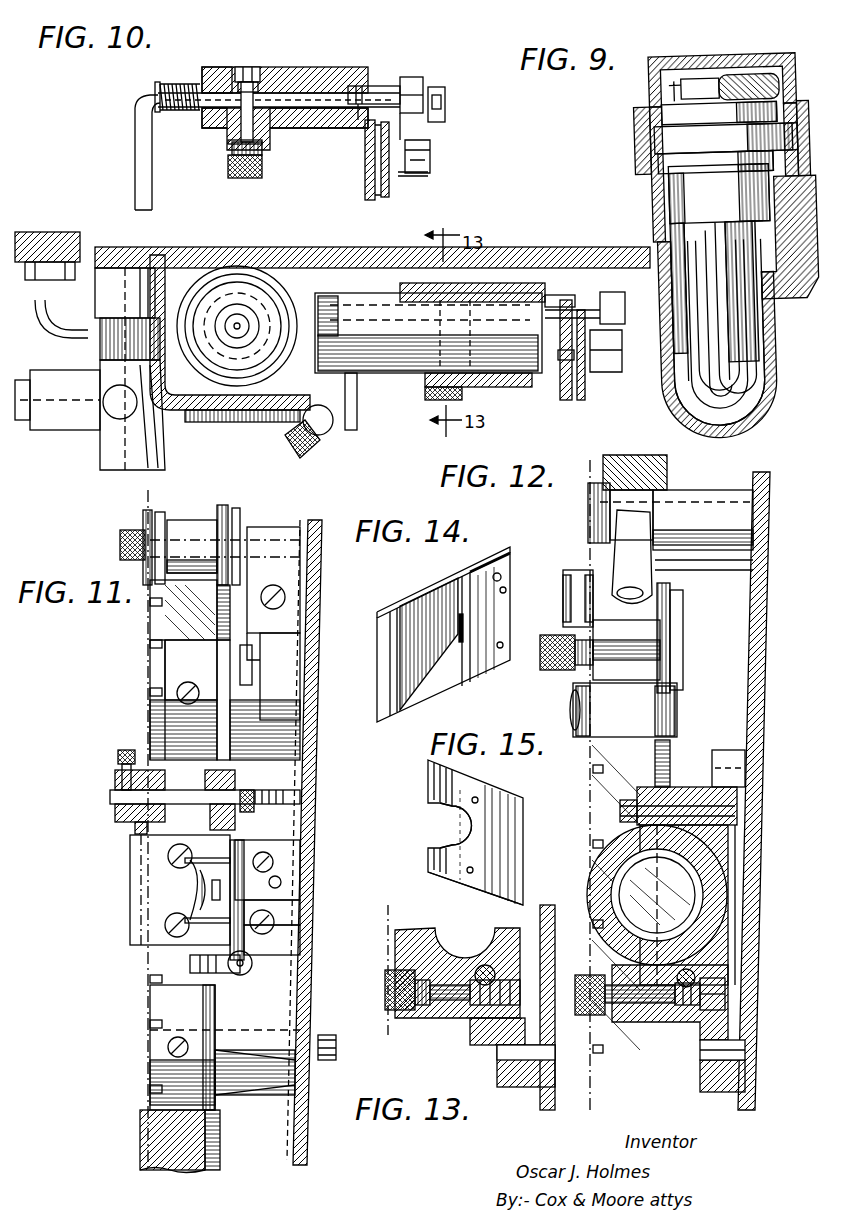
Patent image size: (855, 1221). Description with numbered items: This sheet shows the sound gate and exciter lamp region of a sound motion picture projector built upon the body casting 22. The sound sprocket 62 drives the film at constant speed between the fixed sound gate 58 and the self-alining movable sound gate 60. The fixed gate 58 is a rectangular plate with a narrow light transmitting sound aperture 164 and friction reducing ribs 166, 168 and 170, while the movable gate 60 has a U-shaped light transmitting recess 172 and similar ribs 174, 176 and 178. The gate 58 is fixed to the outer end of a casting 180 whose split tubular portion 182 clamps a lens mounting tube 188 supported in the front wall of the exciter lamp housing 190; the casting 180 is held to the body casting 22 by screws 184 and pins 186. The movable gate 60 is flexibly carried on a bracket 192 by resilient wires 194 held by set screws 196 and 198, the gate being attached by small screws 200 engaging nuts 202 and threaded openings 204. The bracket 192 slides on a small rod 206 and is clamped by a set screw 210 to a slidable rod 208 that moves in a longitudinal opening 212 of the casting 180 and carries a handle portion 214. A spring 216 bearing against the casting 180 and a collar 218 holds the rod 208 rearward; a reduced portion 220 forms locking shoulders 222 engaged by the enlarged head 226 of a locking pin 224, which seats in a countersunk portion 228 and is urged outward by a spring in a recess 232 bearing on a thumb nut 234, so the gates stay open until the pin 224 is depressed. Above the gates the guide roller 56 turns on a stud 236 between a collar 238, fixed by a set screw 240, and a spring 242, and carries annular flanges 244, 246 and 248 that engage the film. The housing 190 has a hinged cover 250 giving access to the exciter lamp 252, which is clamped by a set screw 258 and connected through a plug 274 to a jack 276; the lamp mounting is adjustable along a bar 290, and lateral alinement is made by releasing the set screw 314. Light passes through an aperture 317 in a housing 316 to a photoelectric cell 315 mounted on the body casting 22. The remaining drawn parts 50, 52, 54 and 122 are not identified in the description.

In FIG. 12, the body casting 22 is at (358, 247).
In FIG. 11, the body casting 22 is at (320, 626).
In FIG. 13, the body casting 22 is at (549, 908).
In FIG. 13, the knurled knob 50 is at (560, 668).
In FIG. 11, the bracket 52 is at (152, 655).
In FIG. 11, the adjusting knob 54 is at (143, 525).
In FIG. 11, the guide roller 56 is at (120, 810).
In FIG. 10, the fixed sound gate 58 is at (365, 183).
In FIG. 12, the fixed sound gate 58 is at (560, 396).
In FIG. 14, the fixed sound gate 58 is at (505, 570).
In FIG. 10, the movable sound gate 60 is at (389, 190).
In FIG. 12, the movable sound gate 60 is at (585, 402).
In FIG. 11, the movable sound gate 60 is at (135, 902).
In FIG. 15, the movable sound gate 60 is at (455, 878).
In FIG. 11, the sound sprocket 62 is at (170, 1006).
In FIG. 11, the knob 122 is at (338, 1048).
In FIG. 12, the sound aperture 164 is at (566, 380).
In FIG. 11, the sound aperture 164 is at (285, 887).
In FIG. 14, the sound aperture 164 is at (462, 640).
In FIG. 14, the rib 166 is at (480, 566).
In FIG. 14, the rib 168 is at (440, 592).
In FIG. 14, the rib 170 is at (395, 613).
In FIG. 15, the light transmitting recess 172 is at (445, 825).
In FIG. 15, the rib 174 is at (430, 776).
In FIG. 15, the rib 176 is at (430, 793).
In FIG. 15, the rib 178 is at (500, 818).
In FIG. 10, the casting 180 is at (210, 67).
In FIG. 12, the casting 180 is at (487, 290).
In FIG. 13, the casting 180 is at (732, 868).
In FIG. 13, the split tubular portion 182 is at (598, 783).
In FIG. 13, the screws 184 is at (715, 750).
In FIG. 13, the pins 186 is at (497, 1062).
In FIG. 12, the lens mounting tube 188 is at (420, 360).
In FIG. 13, the lens mounting tube 188 is at (705, 915).
In FIG. 12, the exciter lamp housing 190 is at (160, 262).
In FIG. 10, the bracket 192 is at (420, 78).
In FIG. 11, the bracket 192 is at (286, 905).
In FIG. 10, the resilient wires 194 is at (425, 174).
In FIG. 11, the resilient wires 194 is at (200, 900).
In FIG. 10, the set screw 196 is at (446, 107).
In FIG. 11, the set screw 196 is at (290, 860).
In FIG. 11, the set screw 198 is at (290, 932).
In FIG. 11, the small screws 200 is at (170, 868).
In FIG. 11, the nuts 202 is at (168, 858).
In FIG. 15, the threaded openings 204 is at (478, 800).
In FIG. 10, the pin or small rod 206 is at (408, 80).
In FIG. 12, the pin or small rod 206 is at (590, 305).
In FIG. 10, the slidable rod 208 is at (332, 72).
In FIG. 12, the slidable rod 208 is at (548, 295).
In FIG. 11, the slidable rod 208 is at (262, 968).
In FIG. 15, the slidable rod 208 is at (469, 865).
In FIG. 13, the slidable rod 208 is at (482, 965).
In FIG. 10, the set screw 210 is at (432, 152).
In FIG. 12, the set screw 210 is at (608, 372).
In FIG. 11, the set screw 210 is at (200, 966).
In FIG. 10, the longitudinal opening 212 is at (288, 93).
In FIG. 10, the handle portion 214 is at (135, 166).
In FIG. 12, the handle portion 214 is at (357, 420).
In FIG. 10, the spring 216 is at (179, 82).
In FIG. 10, the collar 218 is at (156, 96).
In FIG. 10, the reduced diameter portion 220 is at (228, 116).
In FIG. 13, the reduced diameter portion 220 is at (752, 955).
In FIG. 10, the locking shoulders 222 is at (246, 66).
In FIG. 10, the locking pin 224 is at (275, 122).
In FIG. 12, the locking pin 224 is at (432, 350).
In FIG. 13, the locking pin 224 is at (442, 952).
In FIG. 10, the enlarged head 226 is at (262, 68).
In FIG. 13, the enlarged head 226 is at (480, 1010).
In FIG. 10, the countersunk portion 228 is at (266, 150).
In FIG. 13, the countersunk portion 228 is at (430, 965).
In FIG. 10, the recess 232 is at (232, 150).
In FIG. 13, the recess 232 is at (418, 1012).
In FIG. 10, the thumb nut 234 is at (228, 175).
In FIG. 12, the thumb nut 234 is at (462, 393).
In FIG. 13, the thumb nut 234 is at (394, 1006).
In FIG. 11, the stud 236 is at (112, 795).
In FIG. 11, the collar 238 is at (118, 778).
In FIG. 11, the set screw 240 is at (125, 752).
In FIG. 11, the spring 242 is at (250, 812).
In FIG. 11, the annular flange 244 is at (215, 822).
In FIG. 11, the annular flange 246 is at (205, 782).
In FIG. 11, the annular flange 248 is at (150, 826).
In FIG. 12, the hinged cover 250 is at (240, 420).
In FIG. 12, the exciter lamp 252 is at (255, 300).
In FIG. 12, the set screw 258 is at (325, 450).
In FIG. 12, the plug 274 is at (50, 235).
In FIG. 12, the jack 276 is at (35, 328).
In FIG. 12, the bar 290 is at (224, 420).
In FIG. 12, the set screw 314 is at (110, 420).
In FIG. 9, the photoelectric cell 315 is at (745, 380).
In FIG. 9, the housing 316 is at (760, 330).
In FIG. 9, the aperture 317 is at (690, 328).